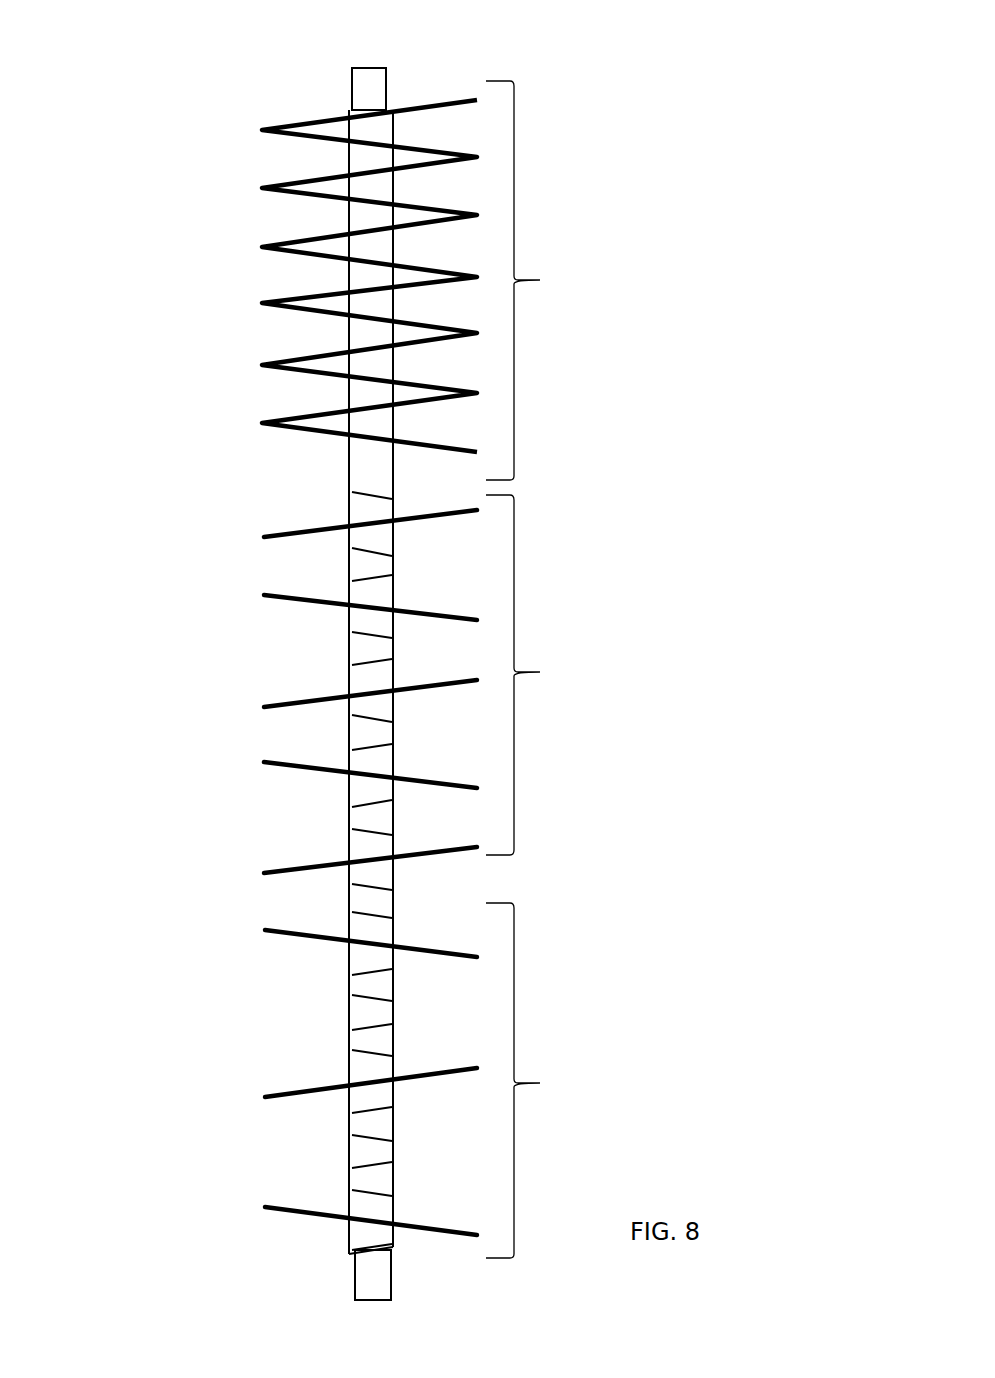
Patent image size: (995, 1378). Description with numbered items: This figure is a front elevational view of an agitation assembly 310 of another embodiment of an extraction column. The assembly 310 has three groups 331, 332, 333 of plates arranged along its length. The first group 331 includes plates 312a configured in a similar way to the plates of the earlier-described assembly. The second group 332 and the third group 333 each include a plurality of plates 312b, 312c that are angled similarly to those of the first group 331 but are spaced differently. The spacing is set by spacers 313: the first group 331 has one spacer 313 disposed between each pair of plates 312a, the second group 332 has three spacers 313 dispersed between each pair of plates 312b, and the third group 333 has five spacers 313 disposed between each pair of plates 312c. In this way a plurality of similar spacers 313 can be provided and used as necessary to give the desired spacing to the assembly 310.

The assembly 310 is at (656, 58).
The plates 312a is at (320, 252).
The plates 312b is at (323, 595).
The plates 312c is at (322, 1082).
The spacer 313 is at (360, 345).
The first group 331 is at (537, 280).
The second group 332 is at (537, 675).
The third group 333 is at (537, 1080).